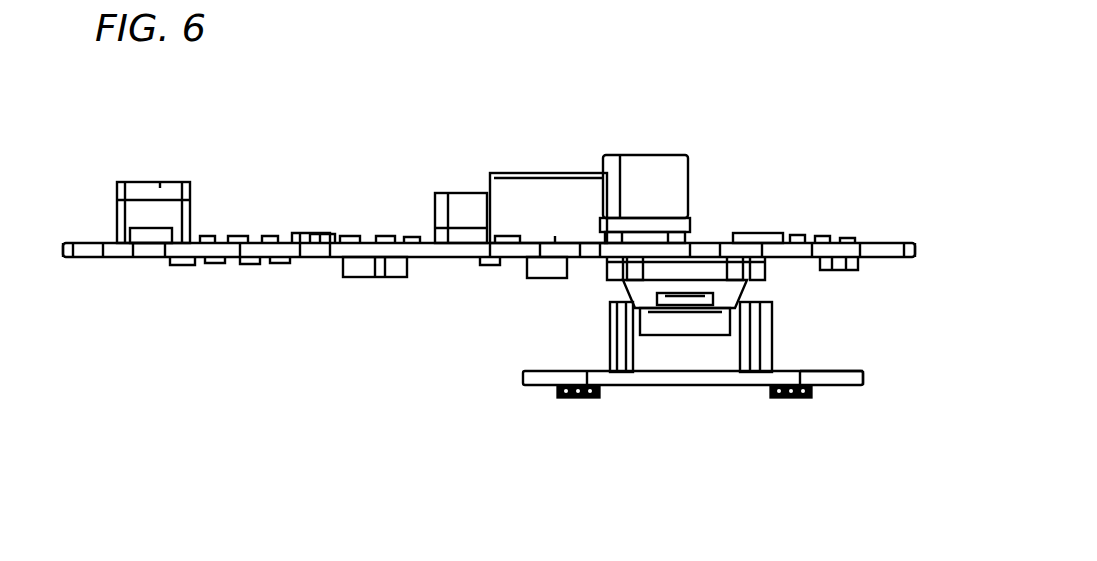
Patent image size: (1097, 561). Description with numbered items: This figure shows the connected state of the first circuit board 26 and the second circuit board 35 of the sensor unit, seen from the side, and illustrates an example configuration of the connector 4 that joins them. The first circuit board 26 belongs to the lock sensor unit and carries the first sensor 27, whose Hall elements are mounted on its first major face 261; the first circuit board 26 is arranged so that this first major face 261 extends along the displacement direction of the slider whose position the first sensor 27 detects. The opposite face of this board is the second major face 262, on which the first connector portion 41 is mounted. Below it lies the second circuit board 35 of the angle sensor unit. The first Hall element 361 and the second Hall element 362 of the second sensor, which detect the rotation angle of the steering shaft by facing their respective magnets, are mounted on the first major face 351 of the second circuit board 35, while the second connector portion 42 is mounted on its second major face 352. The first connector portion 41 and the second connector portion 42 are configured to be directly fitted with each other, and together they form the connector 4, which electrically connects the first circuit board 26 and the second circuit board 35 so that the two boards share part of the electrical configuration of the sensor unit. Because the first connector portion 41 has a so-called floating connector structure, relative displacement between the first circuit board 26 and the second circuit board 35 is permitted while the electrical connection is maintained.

The connector 4 is at (636, 304).
The first circuit board 26 is at (886, 243).
The first sensor 27 is at (321, 238).
The second circuit board 35 is at (669, 377).
The first connector portion 41 is at (707, 272).
The second connector portion 42 is at (708, 357).
The first major face 261 is at (84, 242).
The second major face 262 is at (887, 258).
The first major face 351 is at (840, 386).
The second major face 352 is at (815, 371).
The first Hall element 361 is at (579, 398).
The second Hall element 362 is at (792, 398).